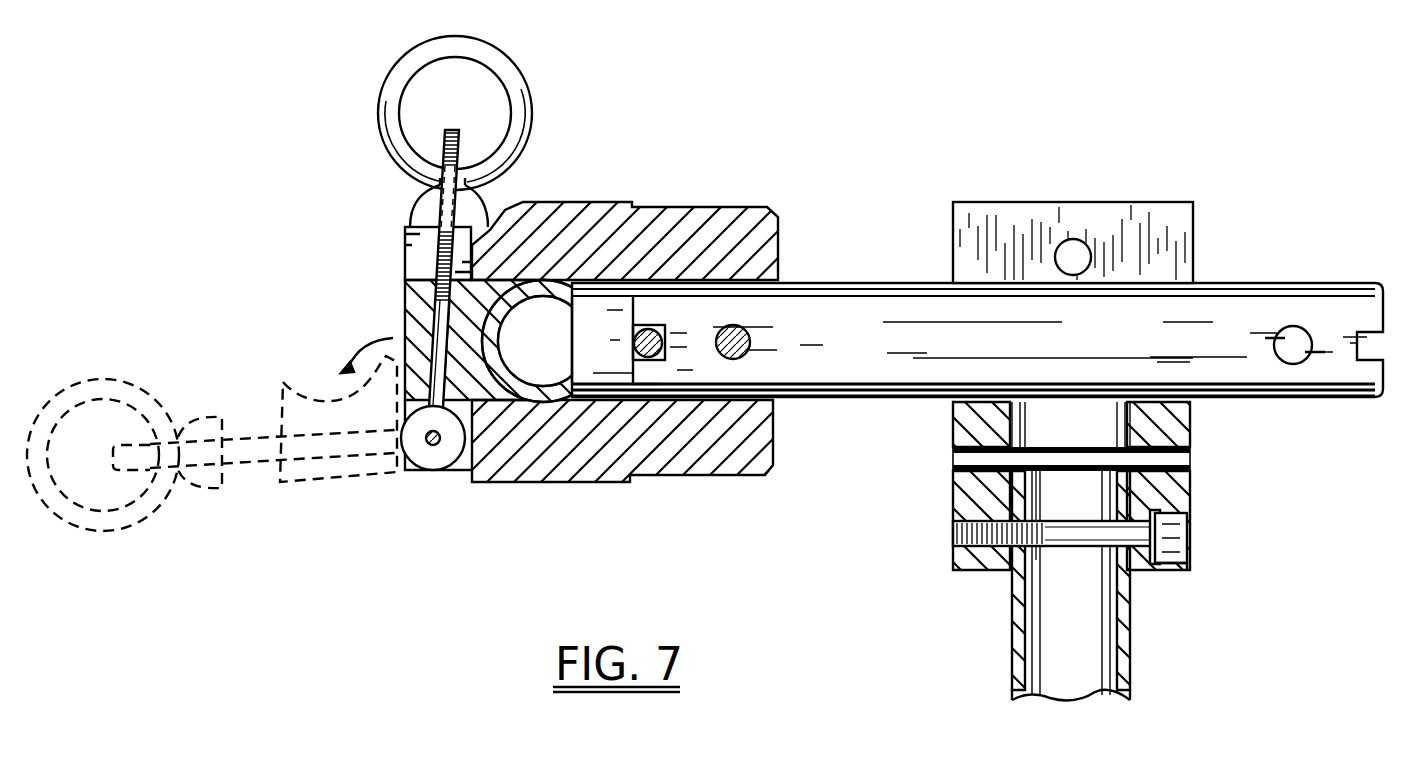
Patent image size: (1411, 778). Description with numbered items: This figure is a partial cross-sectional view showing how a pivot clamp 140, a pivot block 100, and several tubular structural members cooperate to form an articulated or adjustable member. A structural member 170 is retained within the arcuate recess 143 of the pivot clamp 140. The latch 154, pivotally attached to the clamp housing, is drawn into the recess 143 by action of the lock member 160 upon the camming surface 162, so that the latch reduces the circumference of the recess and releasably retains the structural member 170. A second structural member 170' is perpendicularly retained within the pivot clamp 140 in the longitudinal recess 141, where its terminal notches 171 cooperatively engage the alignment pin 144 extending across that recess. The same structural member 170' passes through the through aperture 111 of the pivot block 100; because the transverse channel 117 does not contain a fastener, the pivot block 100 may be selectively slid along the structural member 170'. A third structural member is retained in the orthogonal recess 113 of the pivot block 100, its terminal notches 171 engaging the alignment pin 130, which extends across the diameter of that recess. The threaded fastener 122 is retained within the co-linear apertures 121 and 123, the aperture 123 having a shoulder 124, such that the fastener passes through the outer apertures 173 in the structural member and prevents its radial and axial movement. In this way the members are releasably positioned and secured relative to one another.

The pivot block 100 is at (1227, 254).
The through aperture 111 is at (1152, 292).
The orthogonal recess 113 is at (1132, 483).
The transverse channel 117 is at (1068, 240).
The aperture 121 is at (972, 548).
The threaded fastener 122 is at (1182, 543).
The aperture 123 is at (1172, 572).
The shoulder 124 is at (1150, 508).
The alignment pin 130 is at (1190, 445).
The pivot clamp 140 is at (762, 482).
The longitudinal recess 141 is at (722, 385).
The arcuate recess 143 is at (590, 368).
The alignment pin 144 is at (668, 300).
The latch 154 is at (407, 330).
The lock member 160 is at (506, 70).
The camming surface 162 is at (484, 222).
The structural member 170 is at (591, 266).
The structural member 170' is at (977, 304).
The notches 171 is at (655, 398).
The outer apertures 173 is at (1295, 327).